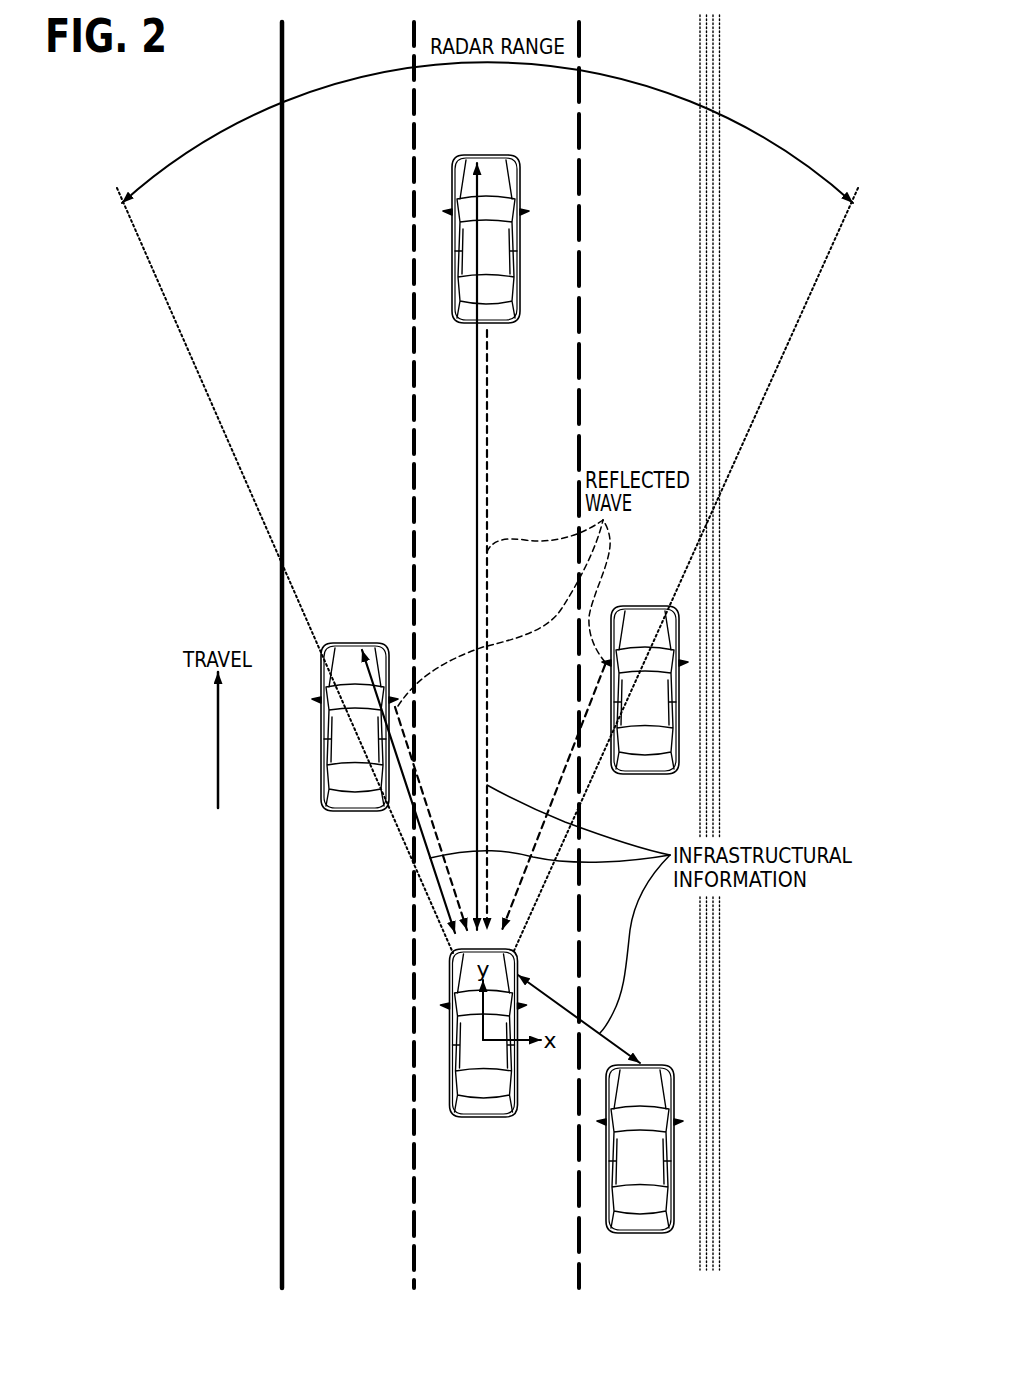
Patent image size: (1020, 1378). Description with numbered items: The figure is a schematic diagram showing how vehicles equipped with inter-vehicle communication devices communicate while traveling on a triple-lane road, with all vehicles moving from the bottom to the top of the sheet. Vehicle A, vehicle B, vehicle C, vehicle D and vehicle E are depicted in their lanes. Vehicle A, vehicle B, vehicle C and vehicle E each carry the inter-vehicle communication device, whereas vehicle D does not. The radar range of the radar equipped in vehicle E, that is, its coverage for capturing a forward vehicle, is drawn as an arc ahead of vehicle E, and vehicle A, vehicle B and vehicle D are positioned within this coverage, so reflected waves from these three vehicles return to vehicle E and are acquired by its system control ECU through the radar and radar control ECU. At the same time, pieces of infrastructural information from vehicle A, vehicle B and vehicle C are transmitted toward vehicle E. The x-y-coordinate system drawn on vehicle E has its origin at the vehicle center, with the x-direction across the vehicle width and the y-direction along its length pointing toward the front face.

The vehicle A is at (486, 152).
The vehicle B is at (355, 641).
The vehicle C is at (640, 1235).
The vehicle D is at (645, 605).
The vehicle E is at (483, 1120).